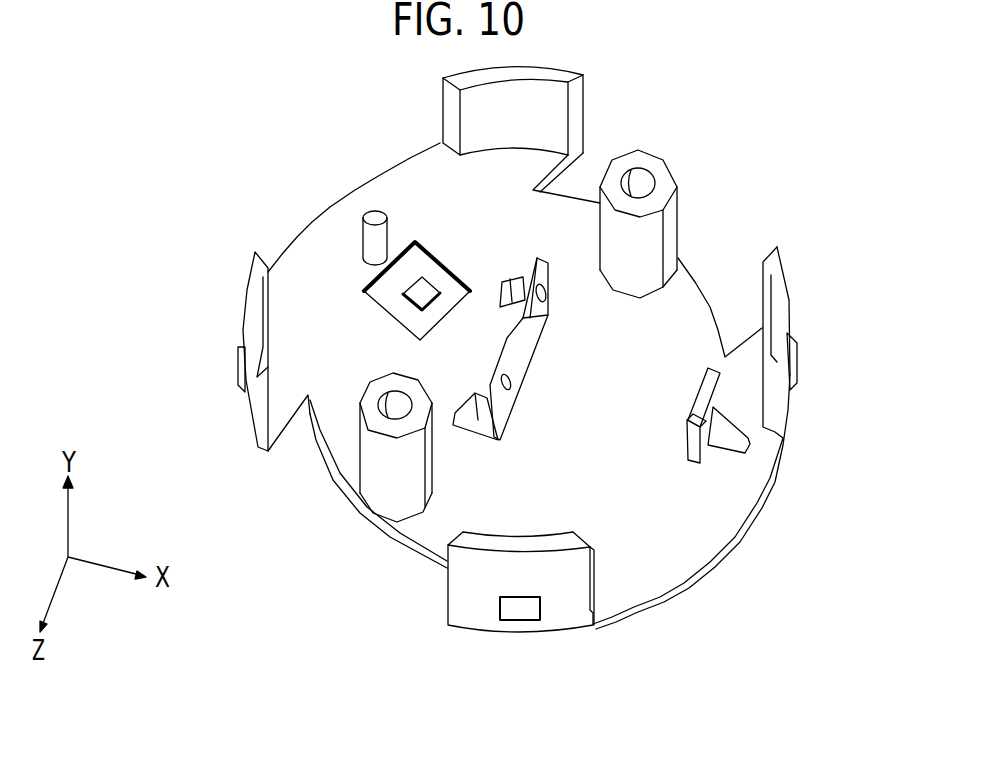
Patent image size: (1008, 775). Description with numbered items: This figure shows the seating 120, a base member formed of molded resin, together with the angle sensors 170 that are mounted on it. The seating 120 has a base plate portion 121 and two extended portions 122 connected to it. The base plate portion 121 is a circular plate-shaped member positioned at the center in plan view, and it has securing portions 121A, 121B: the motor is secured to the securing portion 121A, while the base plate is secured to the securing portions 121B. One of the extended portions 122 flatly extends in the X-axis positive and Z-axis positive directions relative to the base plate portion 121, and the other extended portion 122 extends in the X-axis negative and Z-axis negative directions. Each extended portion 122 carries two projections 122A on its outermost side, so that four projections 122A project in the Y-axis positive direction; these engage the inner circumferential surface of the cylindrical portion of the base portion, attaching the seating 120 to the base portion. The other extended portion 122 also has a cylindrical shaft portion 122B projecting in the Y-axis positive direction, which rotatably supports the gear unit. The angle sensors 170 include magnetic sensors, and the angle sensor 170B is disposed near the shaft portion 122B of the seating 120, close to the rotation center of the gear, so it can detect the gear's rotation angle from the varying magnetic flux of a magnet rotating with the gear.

The seating 120 is at (733, 540).
The base plate portion 121 is at (440, 522).
The securing portion 121A is at (500, 365).
The securing portions 121B is at (658, 177).
The extended portions 122 is at (652, 543).
The projections 122A is at (777, 280).
The shaft portion 122B is at (365, 210).
The angle sensors 170 is at (306, 263).
The angle sensor 170B is at (413, 284).